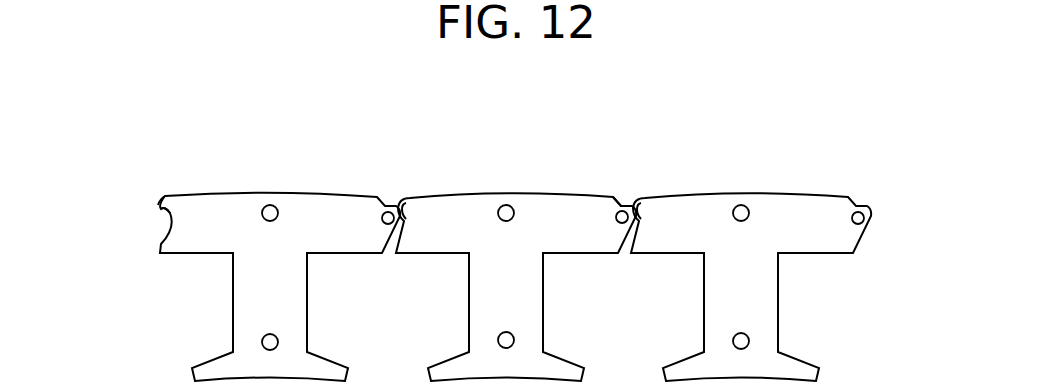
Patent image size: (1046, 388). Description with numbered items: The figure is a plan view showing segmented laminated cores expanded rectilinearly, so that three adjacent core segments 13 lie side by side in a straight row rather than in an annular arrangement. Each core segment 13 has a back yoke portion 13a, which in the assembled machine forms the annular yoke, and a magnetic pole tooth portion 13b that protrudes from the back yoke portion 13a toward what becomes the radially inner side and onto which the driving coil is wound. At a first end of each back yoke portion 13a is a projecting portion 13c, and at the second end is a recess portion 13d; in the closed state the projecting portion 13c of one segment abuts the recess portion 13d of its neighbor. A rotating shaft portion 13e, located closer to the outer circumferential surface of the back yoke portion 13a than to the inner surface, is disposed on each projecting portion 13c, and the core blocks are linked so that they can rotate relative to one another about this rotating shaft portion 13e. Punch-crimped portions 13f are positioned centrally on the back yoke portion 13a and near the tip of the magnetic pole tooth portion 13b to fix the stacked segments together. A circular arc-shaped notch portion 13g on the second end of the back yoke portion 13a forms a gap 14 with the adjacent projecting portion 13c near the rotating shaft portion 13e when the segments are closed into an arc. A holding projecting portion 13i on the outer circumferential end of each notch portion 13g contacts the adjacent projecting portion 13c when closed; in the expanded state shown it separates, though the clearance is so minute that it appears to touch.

The core segment 13 is at (538, 190).
The back yoke portion 13a is at (487, 200).
The magnetic pole tooth portion 13b is at (513, 306).
The projecting portion 13c is at (872, 220).
The recess portion 13d is at (160, 245).
The rotating shaft portion 13e is at (623, 207).
The punch-crimped portions 13f is at (278, 338).
The notch portion 13g is at (160, 210).
The holding projecting portion 13i is at (160, 202).
The gap 14 is at (408, 196).